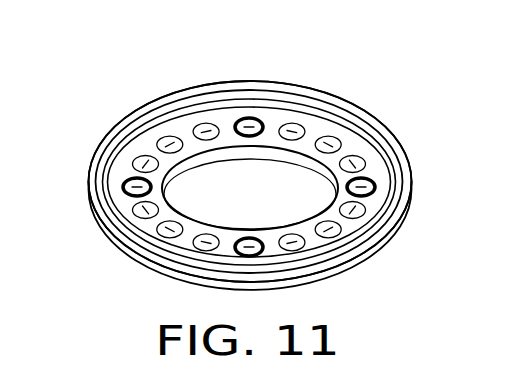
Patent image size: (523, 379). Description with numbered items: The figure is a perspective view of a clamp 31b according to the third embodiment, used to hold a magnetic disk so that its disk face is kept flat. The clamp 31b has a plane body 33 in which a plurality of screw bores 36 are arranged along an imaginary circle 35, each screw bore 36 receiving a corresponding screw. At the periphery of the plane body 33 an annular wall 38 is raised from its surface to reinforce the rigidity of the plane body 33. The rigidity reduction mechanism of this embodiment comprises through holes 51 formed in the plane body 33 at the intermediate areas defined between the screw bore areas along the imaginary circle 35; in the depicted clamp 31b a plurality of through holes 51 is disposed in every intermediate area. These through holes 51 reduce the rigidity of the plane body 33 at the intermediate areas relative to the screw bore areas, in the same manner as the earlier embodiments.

The clamp 31b is at (175, 71).
The plane body 33 is at (280, 110).
The imaginary circle 35 is at (413, 170).
The screw bores 36 is at (235, 164).
The annular wall 38 is at (306, 90).
The through holes 51 is at (204, 130).